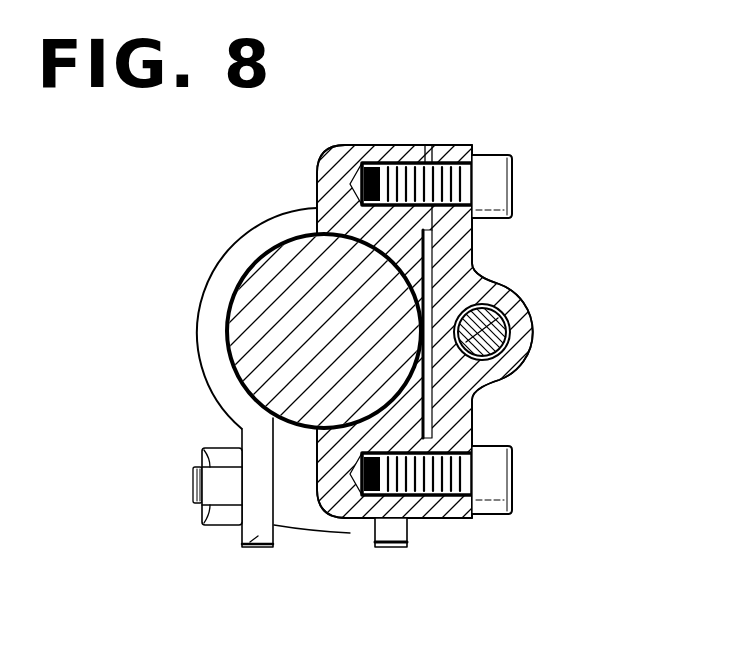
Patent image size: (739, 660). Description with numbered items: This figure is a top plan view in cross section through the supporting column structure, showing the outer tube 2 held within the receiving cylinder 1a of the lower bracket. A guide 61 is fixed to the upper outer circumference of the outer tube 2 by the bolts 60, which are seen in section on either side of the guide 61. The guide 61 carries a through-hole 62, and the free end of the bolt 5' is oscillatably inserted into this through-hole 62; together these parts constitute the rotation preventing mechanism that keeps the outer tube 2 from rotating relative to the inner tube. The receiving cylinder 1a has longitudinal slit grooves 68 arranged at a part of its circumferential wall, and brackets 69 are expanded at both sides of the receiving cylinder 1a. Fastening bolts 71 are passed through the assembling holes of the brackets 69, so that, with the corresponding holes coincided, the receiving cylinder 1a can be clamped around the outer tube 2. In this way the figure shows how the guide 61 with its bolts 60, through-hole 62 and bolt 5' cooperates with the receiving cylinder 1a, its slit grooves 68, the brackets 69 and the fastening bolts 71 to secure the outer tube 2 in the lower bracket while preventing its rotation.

The receiving cylinder 1a is at (224, 250).
The outer tube 2 is at (262, 331).
The bolt 5' is at (543, 310).
The bolts 60 is at (492, 186).
The guide 61 is at (476, 250).
The through-hole 62 is at (533, 343).
The longitudinal slit grooves 68 is at (312, 518).
The brackets 69 is at (243, 548).
The fastening bolts 71 is at (196, 484).